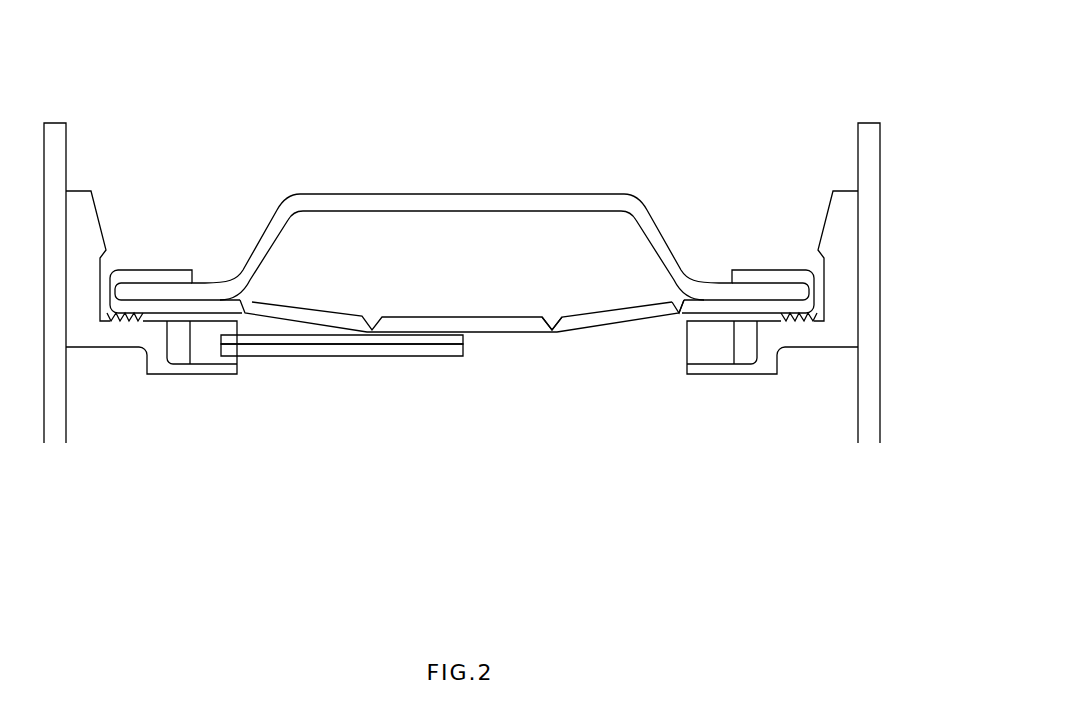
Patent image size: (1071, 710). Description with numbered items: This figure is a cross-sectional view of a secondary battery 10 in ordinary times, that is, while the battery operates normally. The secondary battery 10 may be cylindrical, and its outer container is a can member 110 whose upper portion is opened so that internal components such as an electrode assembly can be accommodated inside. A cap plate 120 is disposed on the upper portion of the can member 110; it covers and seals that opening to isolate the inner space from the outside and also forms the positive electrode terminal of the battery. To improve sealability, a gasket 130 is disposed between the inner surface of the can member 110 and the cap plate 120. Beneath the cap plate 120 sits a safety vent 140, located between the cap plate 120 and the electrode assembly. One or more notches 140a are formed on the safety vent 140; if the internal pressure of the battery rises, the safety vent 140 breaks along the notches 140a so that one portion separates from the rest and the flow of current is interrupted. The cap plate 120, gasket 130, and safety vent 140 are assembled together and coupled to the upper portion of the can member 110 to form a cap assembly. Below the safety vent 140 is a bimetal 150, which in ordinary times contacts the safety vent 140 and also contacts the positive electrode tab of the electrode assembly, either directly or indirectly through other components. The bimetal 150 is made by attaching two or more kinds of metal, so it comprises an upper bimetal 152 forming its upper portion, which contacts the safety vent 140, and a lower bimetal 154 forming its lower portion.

The secondary battery 10 is at (798, 96).
The can member 110 is at (878, 283).
The cap plate 120 is at (439, 194).
The gasket 130 is at (79, 204).
The safety vent 140 is at (430, 318).
The notch 140a is at (672, 302).
The bimetal 150 is at (387, 394).
The upper bimetal 152 is at (453, 337).
The lower bimetal 154 is at (400, 348).